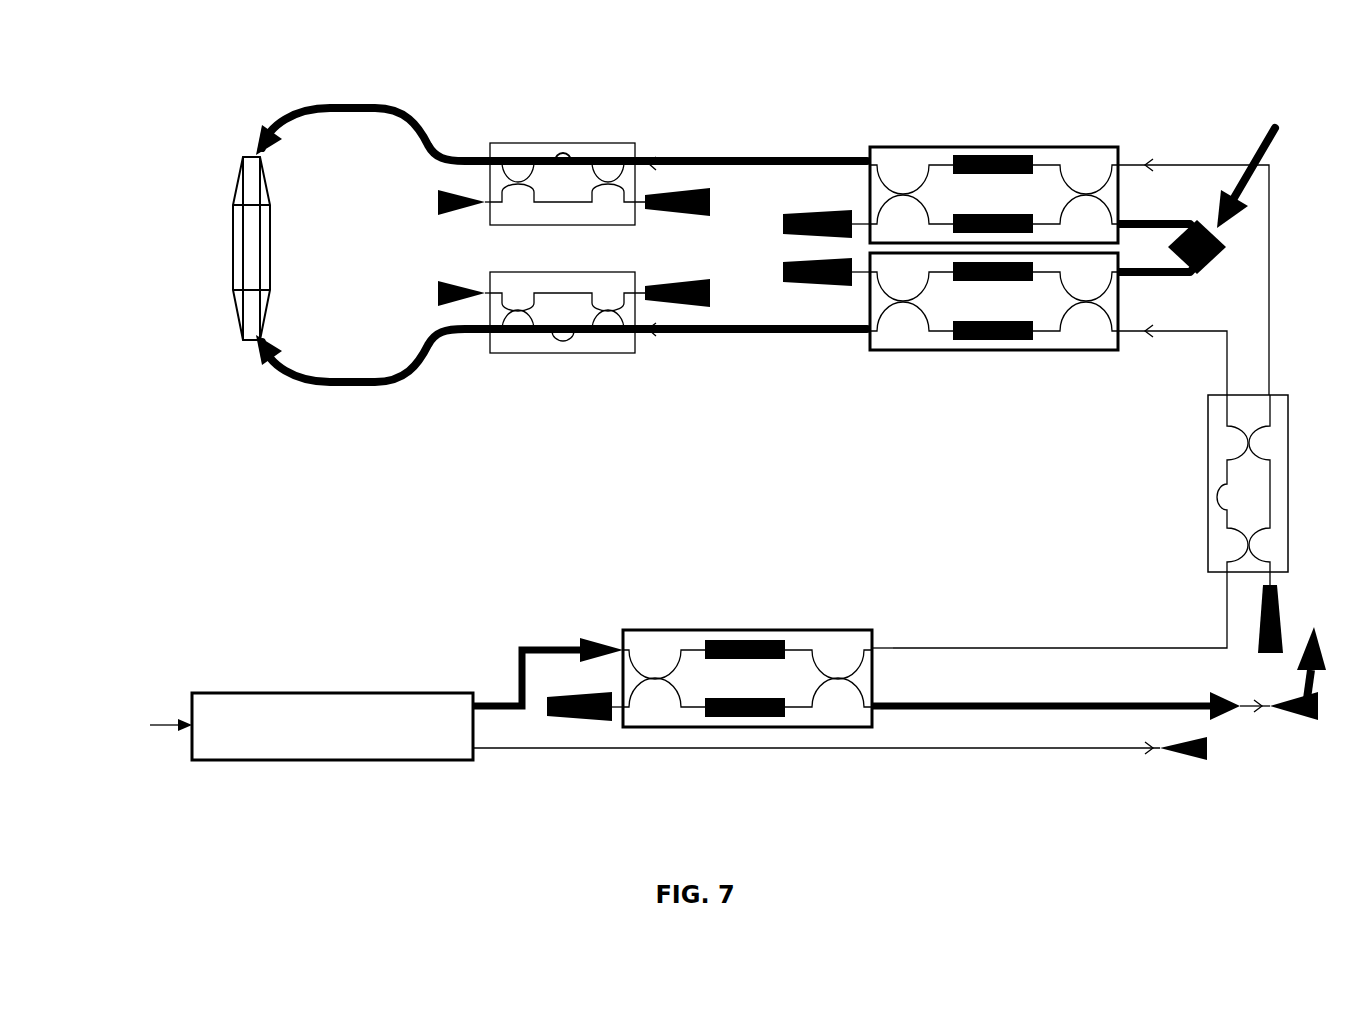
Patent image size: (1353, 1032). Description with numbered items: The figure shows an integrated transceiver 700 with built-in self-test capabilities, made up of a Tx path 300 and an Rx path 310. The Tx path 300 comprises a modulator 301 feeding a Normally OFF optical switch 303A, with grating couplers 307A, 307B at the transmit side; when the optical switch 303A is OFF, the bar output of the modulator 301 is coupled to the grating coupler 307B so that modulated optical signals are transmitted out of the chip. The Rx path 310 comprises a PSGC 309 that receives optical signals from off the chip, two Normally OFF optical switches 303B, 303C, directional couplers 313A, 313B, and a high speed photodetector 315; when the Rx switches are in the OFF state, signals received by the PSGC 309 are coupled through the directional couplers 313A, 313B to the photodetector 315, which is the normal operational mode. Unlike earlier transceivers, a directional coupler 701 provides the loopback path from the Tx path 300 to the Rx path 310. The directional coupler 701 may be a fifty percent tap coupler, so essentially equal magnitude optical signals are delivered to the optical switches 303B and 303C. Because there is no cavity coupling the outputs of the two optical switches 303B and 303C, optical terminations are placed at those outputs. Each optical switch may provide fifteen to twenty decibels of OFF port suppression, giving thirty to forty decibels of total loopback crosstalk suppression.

The transceiver 700 is at (815, 464).
The Tx path 300 is at (290, 605).
The modulator 301 is at (332, 726).
The Normally OFF optical switch 303A is at (693, 630).
The Normally OFF optical switch 303B is at (910, 350).
The Normally OFF optical switch 303C is at (943, 147).
The grating coupler 307A is at (1180, 757).
The grating coupler 307B is at (1302, 719).
The PSGC 309 is at (1211, 264).
The Rx path 310 is at (228, 103).
The directional coupler 313A is at (545, 143).
The directional coupler 313B is at (545, 353).
The high speed photodetector 315 is at (270, 255).
The directional coupler 701 is at (1208, 475).